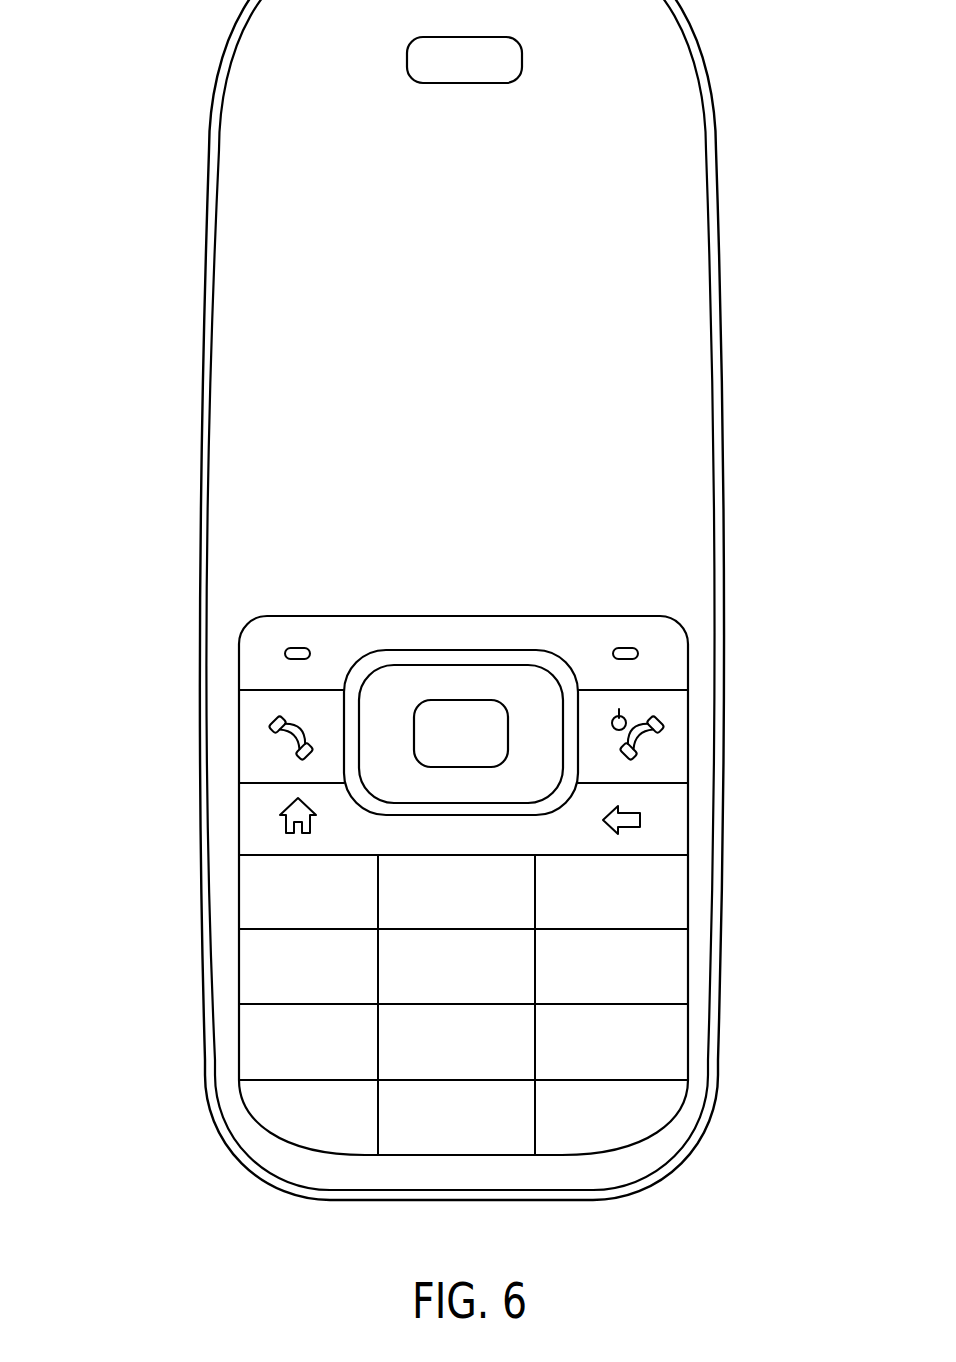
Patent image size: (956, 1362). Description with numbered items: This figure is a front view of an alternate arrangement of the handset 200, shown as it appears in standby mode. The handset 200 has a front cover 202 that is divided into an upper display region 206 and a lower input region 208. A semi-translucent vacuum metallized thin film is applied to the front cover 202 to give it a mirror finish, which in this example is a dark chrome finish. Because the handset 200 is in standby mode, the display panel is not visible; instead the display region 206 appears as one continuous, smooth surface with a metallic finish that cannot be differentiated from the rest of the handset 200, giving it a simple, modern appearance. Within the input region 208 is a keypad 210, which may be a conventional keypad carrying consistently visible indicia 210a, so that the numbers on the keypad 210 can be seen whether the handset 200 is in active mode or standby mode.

The handset 200 is at (152, 105).
The front cover 202 is at (228, 615).
The display region 206 is at (642, 350).
The input region 208 is at (577, 990).
The keypad 210 is at (344, 943).
The consistently visible indicia 210a is at (457, 1054).